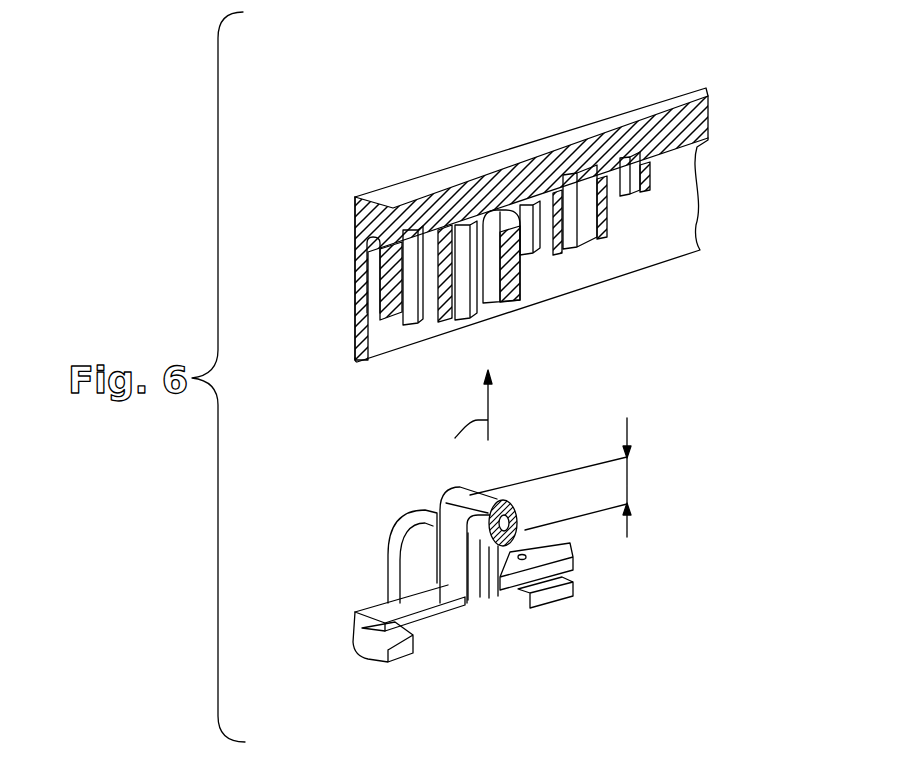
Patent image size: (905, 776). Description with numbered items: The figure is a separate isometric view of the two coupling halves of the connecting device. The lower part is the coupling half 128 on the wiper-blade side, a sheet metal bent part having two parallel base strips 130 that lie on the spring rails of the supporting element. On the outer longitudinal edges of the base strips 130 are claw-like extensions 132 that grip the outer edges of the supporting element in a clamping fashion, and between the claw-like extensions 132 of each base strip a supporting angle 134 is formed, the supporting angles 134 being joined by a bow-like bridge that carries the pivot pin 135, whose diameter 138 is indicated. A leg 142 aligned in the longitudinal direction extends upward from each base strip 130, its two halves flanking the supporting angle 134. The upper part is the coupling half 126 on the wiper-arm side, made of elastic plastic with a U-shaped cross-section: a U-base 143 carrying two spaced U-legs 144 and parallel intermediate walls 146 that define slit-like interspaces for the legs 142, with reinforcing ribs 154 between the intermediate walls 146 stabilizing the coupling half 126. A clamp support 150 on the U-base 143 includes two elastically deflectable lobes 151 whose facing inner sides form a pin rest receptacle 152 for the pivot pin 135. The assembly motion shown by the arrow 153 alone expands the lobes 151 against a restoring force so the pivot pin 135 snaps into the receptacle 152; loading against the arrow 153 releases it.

The coupling half on the wiper-arm side 126 is at (514, 232).
The U-base 143 is at (678, 95).
The pin rest receptacle 152 is at (457, 196).
The U-legs 144 is at (355, 278).
The reinforcing ribs 154 is at (605, 235).
The clamp support 150 is at (537, 262).
The lobes 151 is at (478, 308).
The intermediate walls 146 is at (390, 322).
The assembly arrow 153 is at (451, 418).
The pivot pin 135 is at (517, 505).
The diameter 138 is at (628, 480).
The leg 142 is at (420, 548).
The base strips 130 is at (557, 545).
The coupling half on the wiper-blade side 128 is at (471, 578).
The claw-like extensions 132 is at (557, 593).
The supporting angle 134 is at (490, 572).